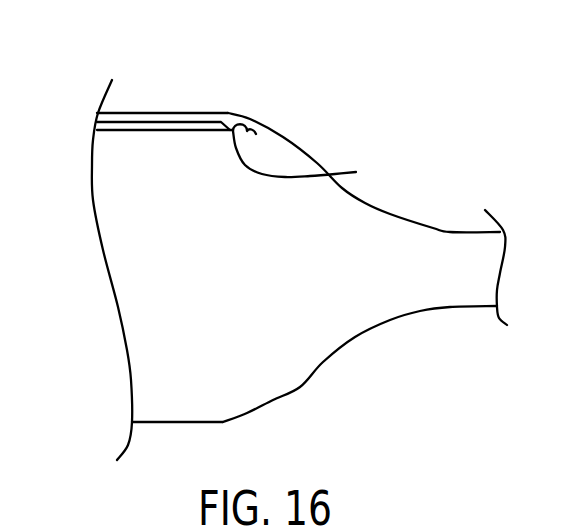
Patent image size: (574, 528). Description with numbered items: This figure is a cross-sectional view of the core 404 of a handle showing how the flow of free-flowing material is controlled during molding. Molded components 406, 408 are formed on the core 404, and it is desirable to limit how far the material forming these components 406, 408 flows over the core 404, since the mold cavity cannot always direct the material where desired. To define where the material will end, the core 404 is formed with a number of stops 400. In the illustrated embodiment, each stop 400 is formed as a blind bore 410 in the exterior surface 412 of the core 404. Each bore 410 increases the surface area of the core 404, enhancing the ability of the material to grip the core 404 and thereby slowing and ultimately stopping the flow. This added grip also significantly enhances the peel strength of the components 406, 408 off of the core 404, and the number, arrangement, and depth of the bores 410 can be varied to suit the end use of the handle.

The stop 400 is at (268, 140).
The core 404 is at (132, 243).
The molded component 406 is at (102, 127).
The molded component 408 is at (135, 113).
The blind bore 410 is at (256, 134).
The exterior surface 412 is at (199, 130).